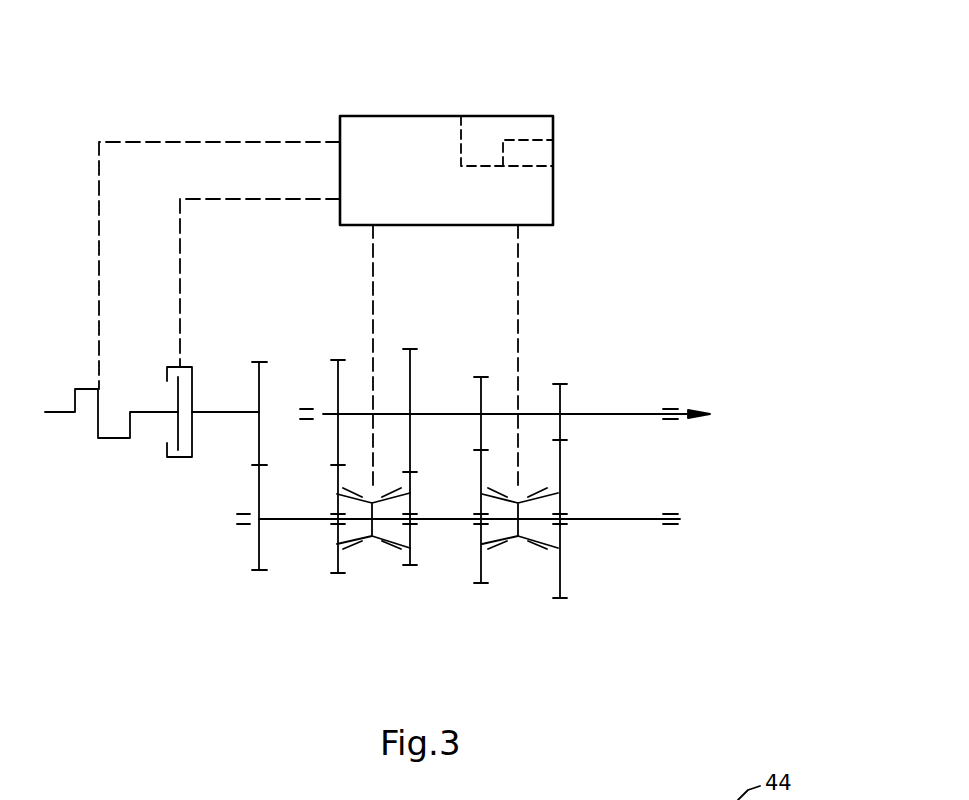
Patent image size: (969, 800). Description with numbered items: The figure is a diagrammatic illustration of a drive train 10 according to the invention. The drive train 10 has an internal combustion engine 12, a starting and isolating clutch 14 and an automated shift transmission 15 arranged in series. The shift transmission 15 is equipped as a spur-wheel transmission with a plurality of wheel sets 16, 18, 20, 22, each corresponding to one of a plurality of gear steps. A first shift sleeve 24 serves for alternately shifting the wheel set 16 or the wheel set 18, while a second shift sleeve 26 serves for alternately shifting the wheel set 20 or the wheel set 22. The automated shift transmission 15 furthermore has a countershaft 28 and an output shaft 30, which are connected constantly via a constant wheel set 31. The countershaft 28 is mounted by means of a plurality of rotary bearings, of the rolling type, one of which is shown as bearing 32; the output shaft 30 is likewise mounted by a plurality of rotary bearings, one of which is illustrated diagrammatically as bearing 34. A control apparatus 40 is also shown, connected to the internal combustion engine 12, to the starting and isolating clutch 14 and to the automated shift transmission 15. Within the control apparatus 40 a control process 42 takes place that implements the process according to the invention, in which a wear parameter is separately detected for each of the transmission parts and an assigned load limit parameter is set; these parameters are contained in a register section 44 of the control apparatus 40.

The drive train 10 is at (650, 228).
The internal combustion engine 12 is at (95, 464).
The starting and isolating clutch 14 is at (165, 479).
The automated shift transmission 15 is at (265, 605).
The wheel set 16 is at (337, 573).
The wheel set 18 is at (412, 567).
The wheel set 20 is at (480, 587).
The wheel set 22 is at (560, 603).
The first shift sleeve 24 is at (372, 540).
The second shift sleeve 26 is at (518, 540).
The countershaft 28 is at (640, 519).
The output shaft 30 is at (640, 414).
The constant wheel set 31 is at (260, 573).
The rotary bearing 32 is at (672, 525).
The rotary bearing 34 is at (670, 423).
The control apparatus 40 is at (538, 113).
The control process 42 is at (475, 130).
The register section 44 is at (537, 155).